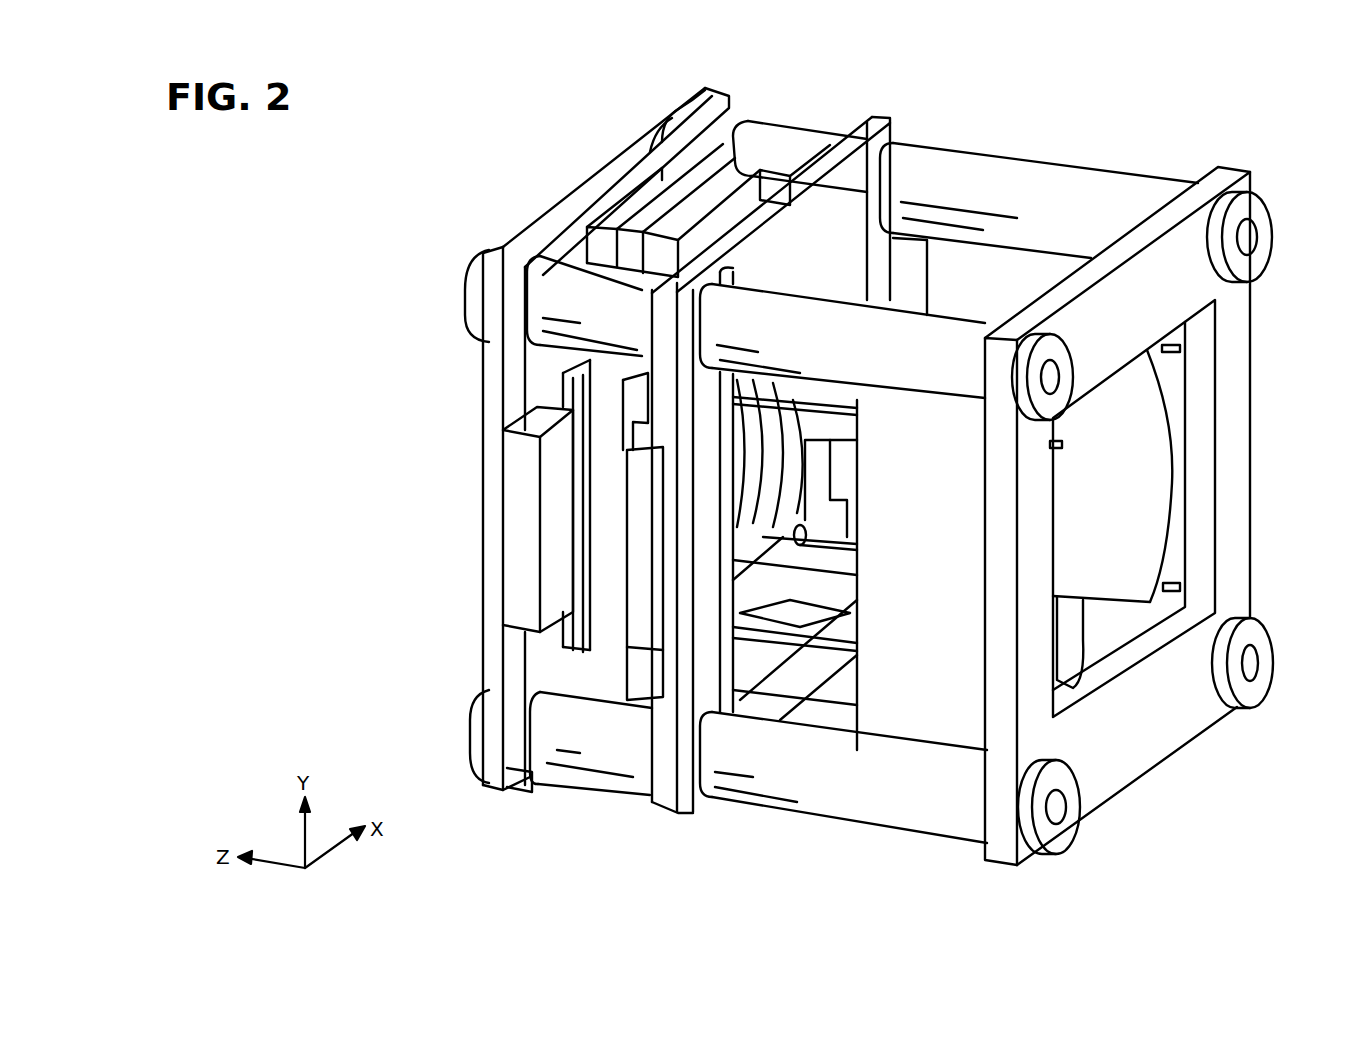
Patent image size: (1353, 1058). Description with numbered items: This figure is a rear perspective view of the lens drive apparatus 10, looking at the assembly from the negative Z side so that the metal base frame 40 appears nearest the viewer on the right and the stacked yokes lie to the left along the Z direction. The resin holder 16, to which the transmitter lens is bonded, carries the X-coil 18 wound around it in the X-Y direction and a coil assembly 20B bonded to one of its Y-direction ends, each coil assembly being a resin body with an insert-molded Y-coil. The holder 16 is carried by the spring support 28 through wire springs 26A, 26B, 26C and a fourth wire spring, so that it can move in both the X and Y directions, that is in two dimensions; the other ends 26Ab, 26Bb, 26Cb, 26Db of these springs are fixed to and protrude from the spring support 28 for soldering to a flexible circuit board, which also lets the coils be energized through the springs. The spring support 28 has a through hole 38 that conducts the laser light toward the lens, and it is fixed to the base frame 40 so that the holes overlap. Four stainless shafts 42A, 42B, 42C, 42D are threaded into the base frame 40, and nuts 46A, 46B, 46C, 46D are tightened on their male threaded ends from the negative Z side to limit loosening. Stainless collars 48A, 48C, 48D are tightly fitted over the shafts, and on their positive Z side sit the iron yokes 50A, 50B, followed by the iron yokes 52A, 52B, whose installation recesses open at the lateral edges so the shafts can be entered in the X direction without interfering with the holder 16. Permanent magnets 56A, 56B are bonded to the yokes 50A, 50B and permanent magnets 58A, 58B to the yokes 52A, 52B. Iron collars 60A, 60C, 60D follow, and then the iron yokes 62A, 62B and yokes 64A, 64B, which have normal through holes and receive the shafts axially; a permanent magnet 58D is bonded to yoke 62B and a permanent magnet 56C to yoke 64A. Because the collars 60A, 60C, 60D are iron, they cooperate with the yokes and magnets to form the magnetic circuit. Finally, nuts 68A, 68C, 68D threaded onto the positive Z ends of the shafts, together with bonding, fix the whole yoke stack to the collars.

The lens drive apparatus 10 is at (1296, 773).
The holder 16 is at (563, 393).
The X-coil 18 is at (593, 459).
The coil assembly 20B is at (667, 223).
The wire spring 26A is at (817, 647).
The other end of wire spring 26Ab is at (1087, 672).
The wire spring 26B is at (857, 549).
The other end of wire spring 26Bb is at (1182, 587).
The wire spring 26C is at (842, 400).
The other end of wire spring 26Cb is at (1064, 445).
The other end of wire spring 26Db is at (1182, 349).
The spring support 28 is at (937, 733).
The through hole 38 is at (1160, 498).
The base frame 40 is at (1250, 436).
The shaft 42A is at (1060, 808).
The shaft 42B is at (1250, 665).
The shaft 42C is at (1060, 390).
The shaft 42D is at (1247, 243).
The nut 46A is at (1070, 782).
The nut 46B is at (1265, 641).
The nut 46C is at (1060, 348).
The nut 46D is at (1263, 210).
The collar 48A is at (883, 813).
The collar 48C is at (945, 328).
The collar 48D is at (1093, 181).
The yoke 50A is at (688, 814).
The yoke 50B is at (917, 124).
The yoke 52A is at (657, 806).
The yoke 52B is at (865, 124).
The permanent magnet 56A is at (625, 690).
The permanent magnet 56B is at (857, 452).
The permanent magnet 56C is at (518, 590).
The permanent magnet 58A is at (797, 610).
The permanent magnet 58B is at (797, 163).
The permanent magnet 58D is at (663, 182).
The collar 60A is at (595, 774).
The collar 60C is at (540, 321).
The collar 60D is at (763, 127).
The yoke 62A is at (520, 790).
The yoke 62B is at (623, 182).
The yoke 64A is at (492, 786).
The yoke 64B is at (705, 102).
The nut 68A is at (472, 728).
The nut 68C is at (468, 300).
The nut 68D is at (672, 118).